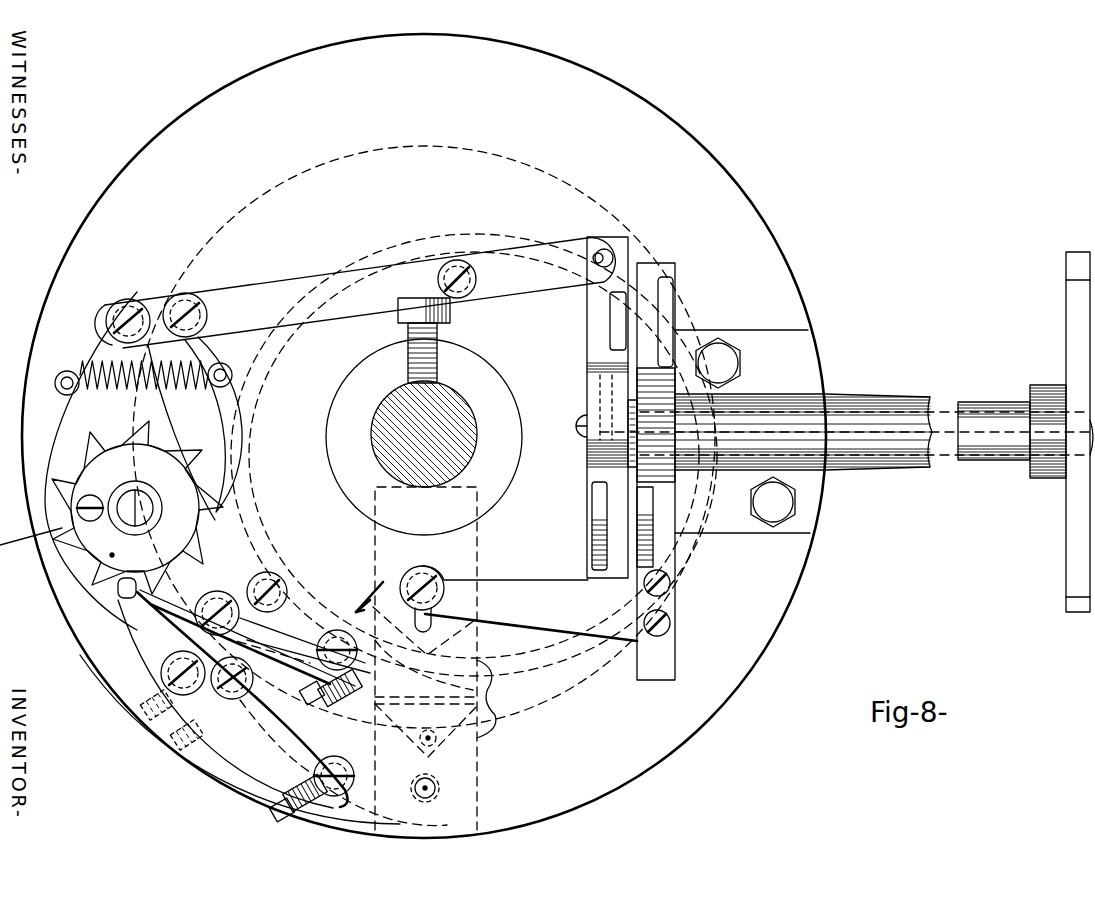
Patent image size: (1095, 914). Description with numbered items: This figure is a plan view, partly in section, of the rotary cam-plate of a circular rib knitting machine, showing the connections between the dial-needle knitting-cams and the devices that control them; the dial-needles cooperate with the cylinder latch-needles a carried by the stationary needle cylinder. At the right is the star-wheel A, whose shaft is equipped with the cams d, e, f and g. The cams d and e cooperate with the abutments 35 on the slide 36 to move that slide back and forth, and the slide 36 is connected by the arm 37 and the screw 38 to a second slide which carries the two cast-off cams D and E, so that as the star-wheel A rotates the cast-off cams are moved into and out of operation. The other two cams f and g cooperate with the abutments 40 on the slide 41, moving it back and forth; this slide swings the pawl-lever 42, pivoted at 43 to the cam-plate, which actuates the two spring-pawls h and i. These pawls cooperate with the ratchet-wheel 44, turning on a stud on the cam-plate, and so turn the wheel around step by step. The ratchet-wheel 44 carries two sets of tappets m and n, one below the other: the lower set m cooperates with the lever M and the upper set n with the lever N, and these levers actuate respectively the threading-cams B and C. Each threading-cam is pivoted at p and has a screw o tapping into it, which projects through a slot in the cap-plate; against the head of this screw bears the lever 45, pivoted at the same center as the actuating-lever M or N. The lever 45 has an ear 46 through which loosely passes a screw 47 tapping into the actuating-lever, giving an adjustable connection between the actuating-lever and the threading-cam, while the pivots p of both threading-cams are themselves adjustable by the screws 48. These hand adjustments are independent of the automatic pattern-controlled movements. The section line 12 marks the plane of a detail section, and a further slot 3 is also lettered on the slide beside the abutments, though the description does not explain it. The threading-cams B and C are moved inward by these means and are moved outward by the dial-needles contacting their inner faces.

The pawl-lever 42 is at (533, 248).
The pivot of pawl-lever 43 is at (457, 262).
The spring-pawl i is at (82, 333).
The spring-pawl h is at (250, 420).
The ratchet-wheel 44 is at (108, 435).
The tappets (lower set) m is at (152, 433).
The tappets (upper set) n is at (190, 458).
The actuating-lever M is at (133, 635).
The cylinder latch-needles a is at (103, 667).
The lever 45 is at (348, 696).
The actuating-lever N is at (288, 638).
The pivot of threading-cam p is at (262, 578).
The screw o is at (338, 630).
The section line 12 is at (282, 720).
The ear 46 is at (345, 705).
The screw 47 is at (310, 684).
The adjusting screws 48 is at (145, 710).
The screw 38 is at (432, 578).
The cast-off cam E is at (424, 631).
The arm 37 is at (596, 633).
The threading-cam C is at (435, 689).
The cast-off cam D is at (426, 730).
The threading-cam B is at (420, 818).
The slide 41 is at (595, 303).
The abutments 40 is at (618, 352).
The cam f is at (618, 388).
The cam g is at (590, 404).
The slide 36 is at (676, 265).
The abutments 35 is at (667, 312).
The slot 3 is at (645, 547).
The cam d is at (660, 470).
The cam e is at (650, 478).
The star-wheel A is at (1070, 313).